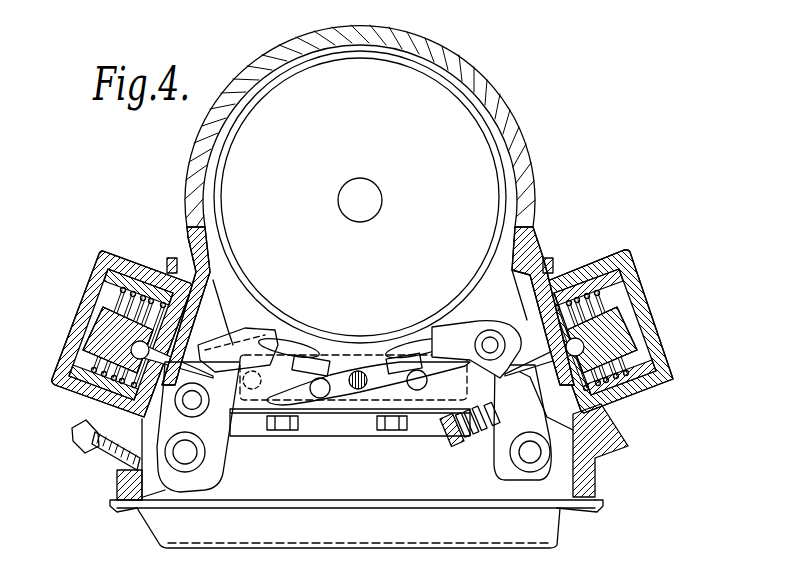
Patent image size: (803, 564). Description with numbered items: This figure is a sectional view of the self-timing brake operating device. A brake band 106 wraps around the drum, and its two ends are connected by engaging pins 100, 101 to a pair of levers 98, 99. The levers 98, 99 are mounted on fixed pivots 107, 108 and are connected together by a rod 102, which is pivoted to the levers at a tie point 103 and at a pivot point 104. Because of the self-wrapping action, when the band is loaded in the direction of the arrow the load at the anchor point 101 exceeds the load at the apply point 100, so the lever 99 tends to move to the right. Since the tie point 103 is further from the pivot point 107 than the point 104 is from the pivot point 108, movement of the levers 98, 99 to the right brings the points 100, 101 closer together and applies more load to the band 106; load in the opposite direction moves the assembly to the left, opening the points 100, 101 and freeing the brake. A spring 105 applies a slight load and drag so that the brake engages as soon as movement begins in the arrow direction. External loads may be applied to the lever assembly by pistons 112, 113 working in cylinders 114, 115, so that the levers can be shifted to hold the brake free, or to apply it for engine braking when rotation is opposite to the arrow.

The lever 98 is at (208, 430).
The lever 99 is at (500, 433).
The engaging pin 100 is at (306, 301).
The engaging pin 101 is at (428, 347).
The rod 102 is at (307, 413).
The tie point 103 is at (488, 340).
The pivot point 104 is at (137, 460).
The spring 105 is at (445, 435).
The brake band 106 is at (217, 181).
The fixed pivot 107 is at (527, 460).
The fixed pivot 108 is at (190, 455).
The piston 112 is at (65, 348).
The piston 113 is at (607, 302).
The cylinder 114 is at (92, 282).
The cylinder 115 is at (633, 273).